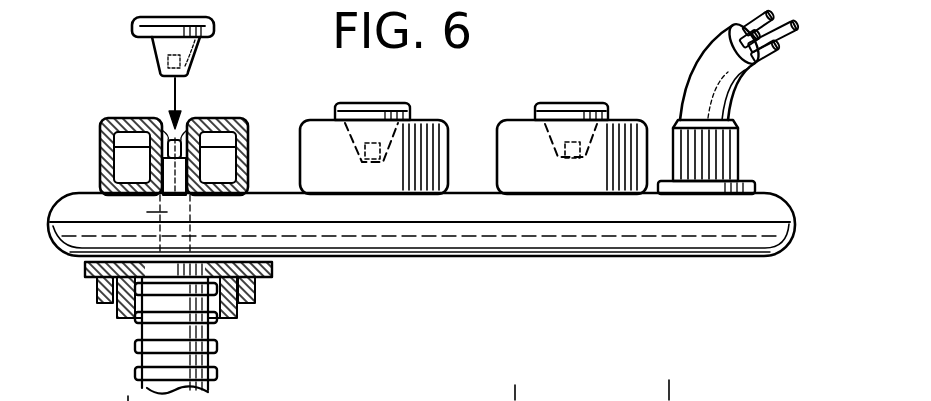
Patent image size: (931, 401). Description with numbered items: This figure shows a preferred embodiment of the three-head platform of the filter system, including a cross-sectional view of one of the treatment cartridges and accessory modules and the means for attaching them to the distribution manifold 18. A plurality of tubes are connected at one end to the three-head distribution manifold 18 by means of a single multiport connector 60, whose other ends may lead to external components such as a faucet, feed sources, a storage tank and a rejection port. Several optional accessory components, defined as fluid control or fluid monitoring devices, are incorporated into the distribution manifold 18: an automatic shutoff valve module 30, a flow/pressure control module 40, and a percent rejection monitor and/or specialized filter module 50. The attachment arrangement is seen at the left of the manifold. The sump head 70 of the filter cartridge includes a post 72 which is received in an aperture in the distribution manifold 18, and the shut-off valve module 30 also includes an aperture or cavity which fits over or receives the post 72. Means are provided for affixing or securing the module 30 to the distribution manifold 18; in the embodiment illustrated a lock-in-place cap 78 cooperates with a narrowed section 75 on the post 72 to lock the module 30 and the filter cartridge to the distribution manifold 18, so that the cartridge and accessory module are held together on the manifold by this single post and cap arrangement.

The distribution manifold 18 is at (786, 194).
The automatic shutoff valve module 30 is at (174, 129).
The flow/pressure control module 40 is at (438, 120).
The percent rejection monitor and/or specialized filter module 50 is at (634, 120).
The multiport connector 60 is at (742, 97).
The sump head 70 is at (258, 287).
The post 72 is at (110, 208).
The narrowed section 75 is at (103, 136).
The lock-in-place cap 78 is at (163, 43).